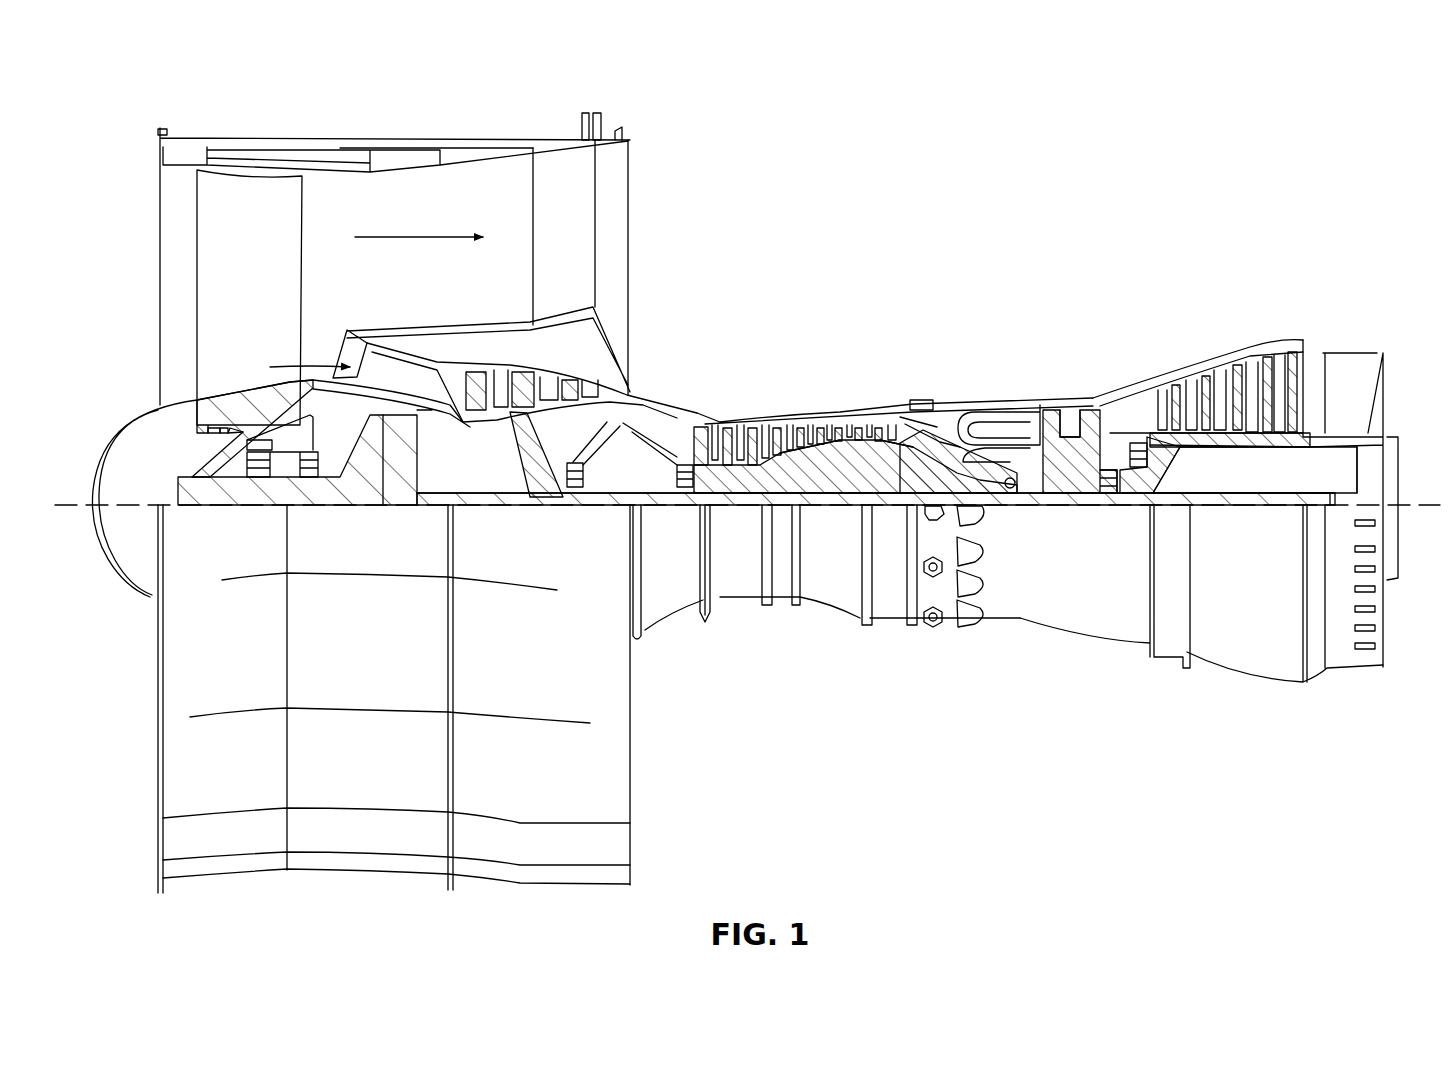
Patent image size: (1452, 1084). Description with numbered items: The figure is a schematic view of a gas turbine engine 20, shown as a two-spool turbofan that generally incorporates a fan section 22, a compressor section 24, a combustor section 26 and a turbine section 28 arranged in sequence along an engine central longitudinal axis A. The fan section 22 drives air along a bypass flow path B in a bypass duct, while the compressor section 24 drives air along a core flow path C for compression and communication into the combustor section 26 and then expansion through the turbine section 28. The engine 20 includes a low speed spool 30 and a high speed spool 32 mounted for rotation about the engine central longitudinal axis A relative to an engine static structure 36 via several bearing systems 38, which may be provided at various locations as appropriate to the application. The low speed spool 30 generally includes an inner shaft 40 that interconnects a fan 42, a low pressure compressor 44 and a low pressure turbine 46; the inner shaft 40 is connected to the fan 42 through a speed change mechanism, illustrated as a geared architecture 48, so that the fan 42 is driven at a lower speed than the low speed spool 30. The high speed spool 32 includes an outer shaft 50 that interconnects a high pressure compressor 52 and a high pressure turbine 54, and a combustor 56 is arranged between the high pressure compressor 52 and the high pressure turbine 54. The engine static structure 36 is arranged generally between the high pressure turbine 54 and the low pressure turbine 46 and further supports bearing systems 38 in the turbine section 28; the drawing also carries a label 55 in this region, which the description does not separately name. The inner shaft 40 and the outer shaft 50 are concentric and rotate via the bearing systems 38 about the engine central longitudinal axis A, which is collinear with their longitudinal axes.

The gas turbine engine 20 is at (1205, 178).
The fan section 22 is at (266, 130).
The compressor section 24 is at (822, 363).
The combustor section 26 is at (990, 362).
The turbine section 28 is at (1136, 346).
The low speed spool 30 is at (853, 508).
The high speed spool 32 is at (903, 457).
The engine static structure 36 is at (892, 622).
The bearing systems 38 is at (262, 480).
The inner shaft 40 is at (647, 508).
The fan 42 is at (279, 270).
The low pressure compressor 44 is at (547, 387).
The low pressure turbine 46 is at (1242, 380).
The geared architecture 48 is at (400, 465).
The outer shaft 50 is at (1020, 482).
The high pressure compressor 52 is at (810, 472).
The high pressure turbine 54 is at (1070, 410).
The mid-turbine frame 55 is at (848, 452).
The combustor 56 is at (996, 425).
The engine central longitudinal axis A is at (1402, 505).
The bypass flow path B is at (422, 234).
The core flow path C is at (280, 363).